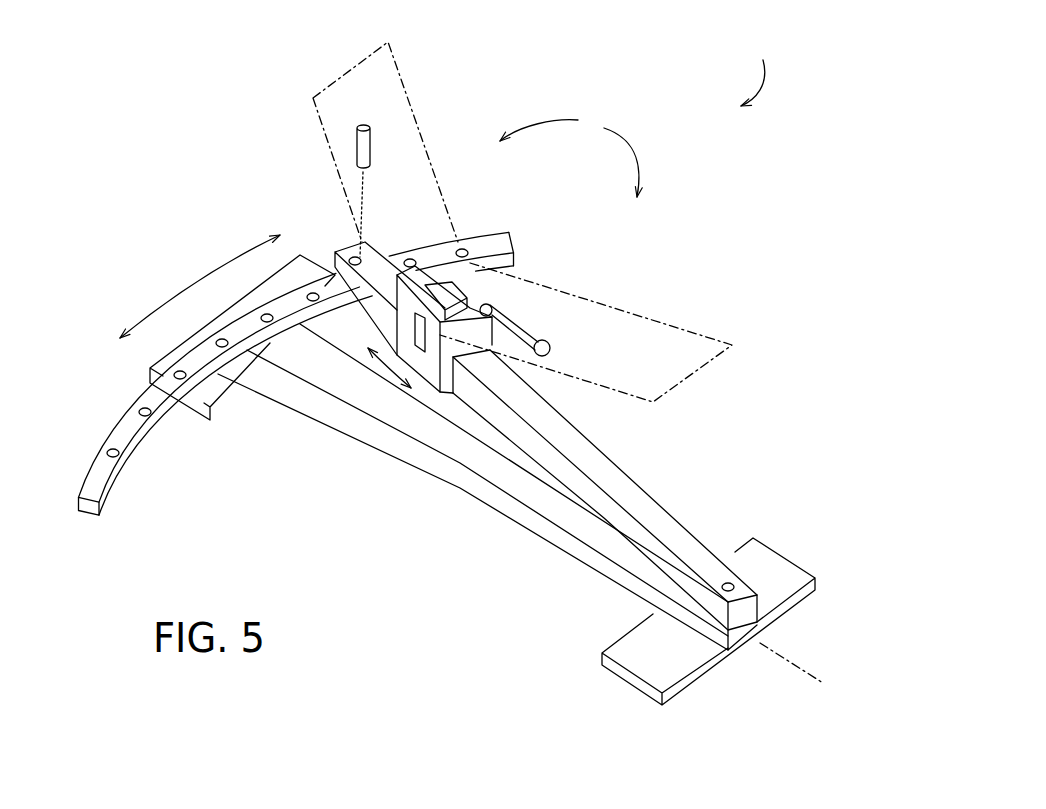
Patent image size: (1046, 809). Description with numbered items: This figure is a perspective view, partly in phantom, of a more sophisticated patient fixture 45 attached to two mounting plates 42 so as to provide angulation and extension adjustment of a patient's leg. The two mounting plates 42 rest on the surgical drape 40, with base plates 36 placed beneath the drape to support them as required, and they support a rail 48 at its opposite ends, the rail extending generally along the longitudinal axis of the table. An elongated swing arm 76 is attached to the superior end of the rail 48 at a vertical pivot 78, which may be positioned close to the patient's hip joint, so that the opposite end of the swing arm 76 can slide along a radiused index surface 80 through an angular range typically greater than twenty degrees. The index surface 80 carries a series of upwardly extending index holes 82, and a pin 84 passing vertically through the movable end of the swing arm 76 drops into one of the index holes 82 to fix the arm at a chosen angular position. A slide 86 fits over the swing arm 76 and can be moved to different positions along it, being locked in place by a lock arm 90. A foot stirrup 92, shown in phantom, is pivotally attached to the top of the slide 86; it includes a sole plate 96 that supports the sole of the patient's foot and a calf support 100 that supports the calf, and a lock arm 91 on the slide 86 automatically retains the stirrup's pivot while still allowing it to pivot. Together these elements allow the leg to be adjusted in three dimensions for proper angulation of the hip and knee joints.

The base plate 36 is at (792, 664).
The surgical drape 40 is at (457, 586).
The mounting plate 42 is at (224, 405).
The patient fixture 45 is at (764, 72).
The rail 48 is at (560, 536).
The swing arm 76 is at (636, 503).
The vertical pivot 78 is at (729, 583).
The radiused index surface 80 is at (93, 481).
The index hole 82 is at (183, 380).
The pin 84 is at (357, 145).
The slide 86 is at (433, 372).
The lock arm 90 is at (517, 325).
The lock arm 91 is at (410, 270).
The foot stirrup 92 is at (569, 152).
The sole plate 96 is at (347, 82).
The calf support 100 is at (718, 354).